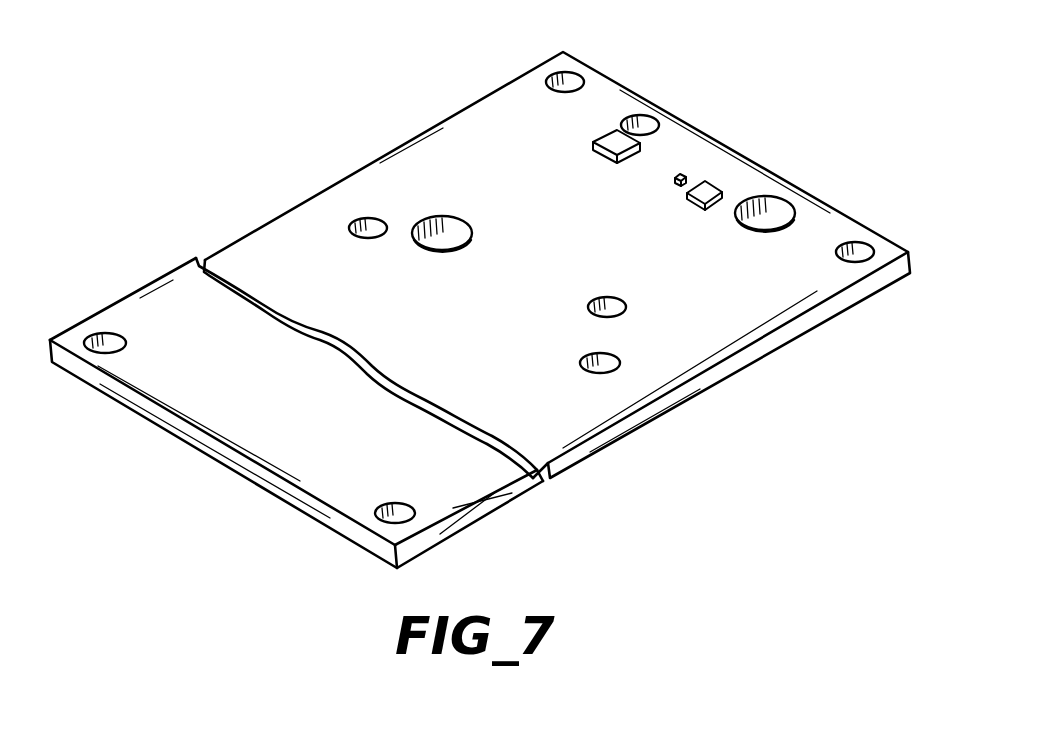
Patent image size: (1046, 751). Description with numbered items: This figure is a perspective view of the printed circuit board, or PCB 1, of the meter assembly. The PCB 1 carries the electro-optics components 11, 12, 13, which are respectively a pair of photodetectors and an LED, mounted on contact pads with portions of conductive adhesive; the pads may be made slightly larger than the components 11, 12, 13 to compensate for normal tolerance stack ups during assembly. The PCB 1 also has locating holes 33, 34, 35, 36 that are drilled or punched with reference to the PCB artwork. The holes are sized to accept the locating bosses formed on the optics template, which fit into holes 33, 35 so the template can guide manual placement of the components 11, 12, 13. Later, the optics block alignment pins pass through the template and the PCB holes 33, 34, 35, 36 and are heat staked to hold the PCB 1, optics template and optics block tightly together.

The printed circuit board 1 is at (570, 470).
The electro-optics component 11 is at (720, 188).
The electro-optics component 12 is at (680, 172).
The electro-optics component 13 is at (602, 130).
The locating hole 33 is at (863, 262).
The locating hole 34 is at (548, 80).
The locating hole 35 is at (353, 222).
The locating hole 36 is at (617, 362).